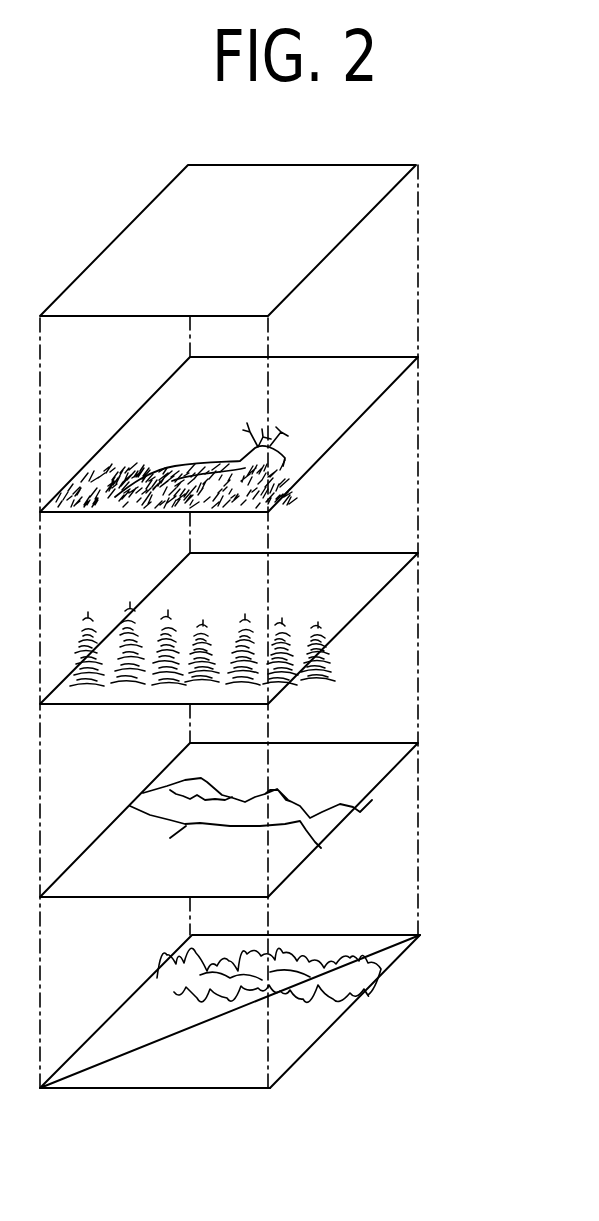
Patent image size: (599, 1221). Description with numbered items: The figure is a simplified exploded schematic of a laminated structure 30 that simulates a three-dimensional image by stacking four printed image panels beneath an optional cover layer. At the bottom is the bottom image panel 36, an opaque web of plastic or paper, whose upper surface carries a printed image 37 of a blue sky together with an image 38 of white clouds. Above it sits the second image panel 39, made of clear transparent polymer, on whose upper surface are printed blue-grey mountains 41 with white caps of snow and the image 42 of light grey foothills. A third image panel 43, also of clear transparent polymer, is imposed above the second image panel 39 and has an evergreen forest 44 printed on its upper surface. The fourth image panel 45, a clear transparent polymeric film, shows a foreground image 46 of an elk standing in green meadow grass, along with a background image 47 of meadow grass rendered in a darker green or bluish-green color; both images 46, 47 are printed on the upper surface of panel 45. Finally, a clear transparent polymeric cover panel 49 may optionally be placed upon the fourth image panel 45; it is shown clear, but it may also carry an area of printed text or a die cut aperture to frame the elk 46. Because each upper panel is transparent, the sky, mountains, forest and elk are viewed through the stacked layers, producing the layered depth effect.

The laminated structure 30 is at (113, 180).
The bottom image panel 36 is at (165, 1089).
The image of a blue sky 37 is at (388, 945).
The image of white clouds 38 is at (320, 990).
The second image panel 39 is at (144, 898).
The mountains 41 is at (328, 822).
The image of light grey foothills 42 is at (293, 840).
The third image panel 43 is at (143, 705).
The evergreen forest 44 is at (305, 660).
The fourth image panel 45 is at (143, 513).
The foreground image of an elk 46 is at (182, 473).
The background image 47 is at (265, 505).
The cover panel 49 is at (145, 318).